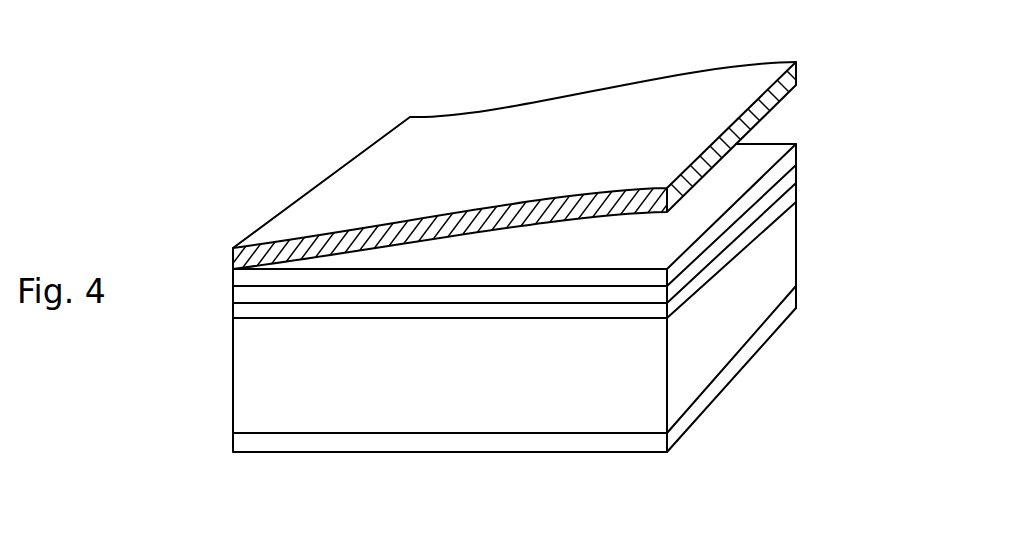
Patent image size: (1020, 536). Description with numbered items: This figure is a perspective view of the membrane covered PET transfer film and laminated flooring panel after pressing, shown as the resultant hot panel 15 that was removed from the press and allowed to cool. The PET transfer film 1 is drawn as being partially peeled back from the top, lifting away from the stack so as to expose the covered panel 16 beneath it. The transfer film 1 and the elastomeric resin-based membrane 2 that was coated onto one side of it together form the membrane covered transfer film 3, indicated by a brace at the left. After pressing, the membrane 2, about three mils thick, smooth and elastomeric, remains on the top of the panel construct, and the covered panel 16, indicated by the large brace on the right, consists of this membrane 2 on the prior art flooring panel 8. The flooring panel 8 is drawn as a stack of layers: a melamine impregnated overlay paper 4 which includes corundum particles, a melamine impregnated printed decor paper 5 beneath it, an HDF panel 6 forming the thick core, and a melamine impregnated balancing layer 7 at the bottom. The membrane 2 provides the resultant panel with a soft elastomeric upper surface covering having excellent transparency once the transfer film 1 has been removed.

The PET transfer film 1 is at (710, 110).
The membrane 2 is at (732, 175).
The membrane covered transfer film 3 is at (506, 159).
The melamine impregnated overlay paper 4 is at (763, 197).
The melamine impregnated printed decor paper 5 is at (743, 235).
The HDF panel 6 is at (725, 304).
The melamine impregnated balancing layer 7 is at (756, 380).
The flooring panel 8 is at (504, 318).
The hot panel 15 is at (308, 134).
The covered panel 16 is at (547, 297).